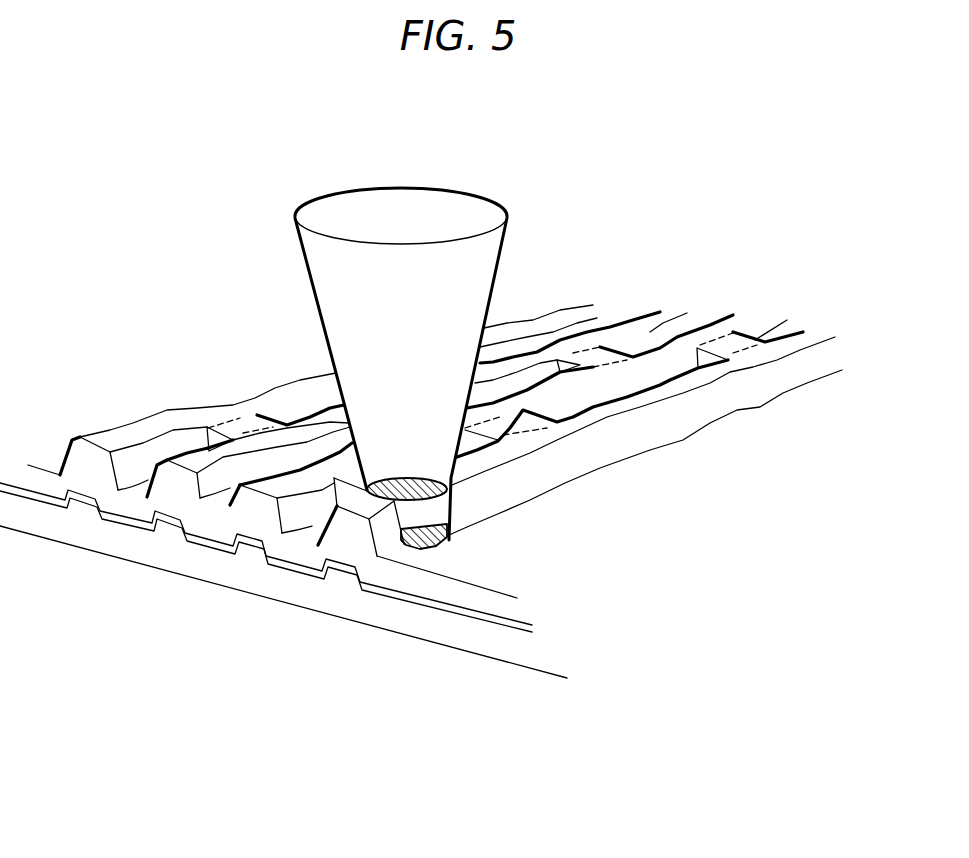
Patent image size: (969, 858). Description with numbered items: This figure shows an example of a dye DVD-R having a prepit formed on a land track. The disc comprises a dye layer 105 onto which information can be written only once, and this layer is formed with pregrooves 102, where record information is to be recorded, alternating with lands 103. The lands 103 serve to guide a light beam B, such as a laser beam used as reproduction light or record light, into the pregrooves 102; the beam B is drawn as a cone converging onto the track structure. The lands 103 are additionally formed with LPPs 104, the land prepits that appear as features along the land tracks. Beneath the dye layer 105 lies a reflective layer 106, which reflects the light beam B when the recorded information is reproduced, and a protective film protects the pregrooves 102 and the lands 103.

The light beam B is at (487, 277).
The pregrooves 102 is at (170, 500).
The lands 103 is at (310, 530).
The LPPs 104 is at (760, 333).
The dye layer 105 is at (495, 602).
The reflective layer 106 is at (487, 617).